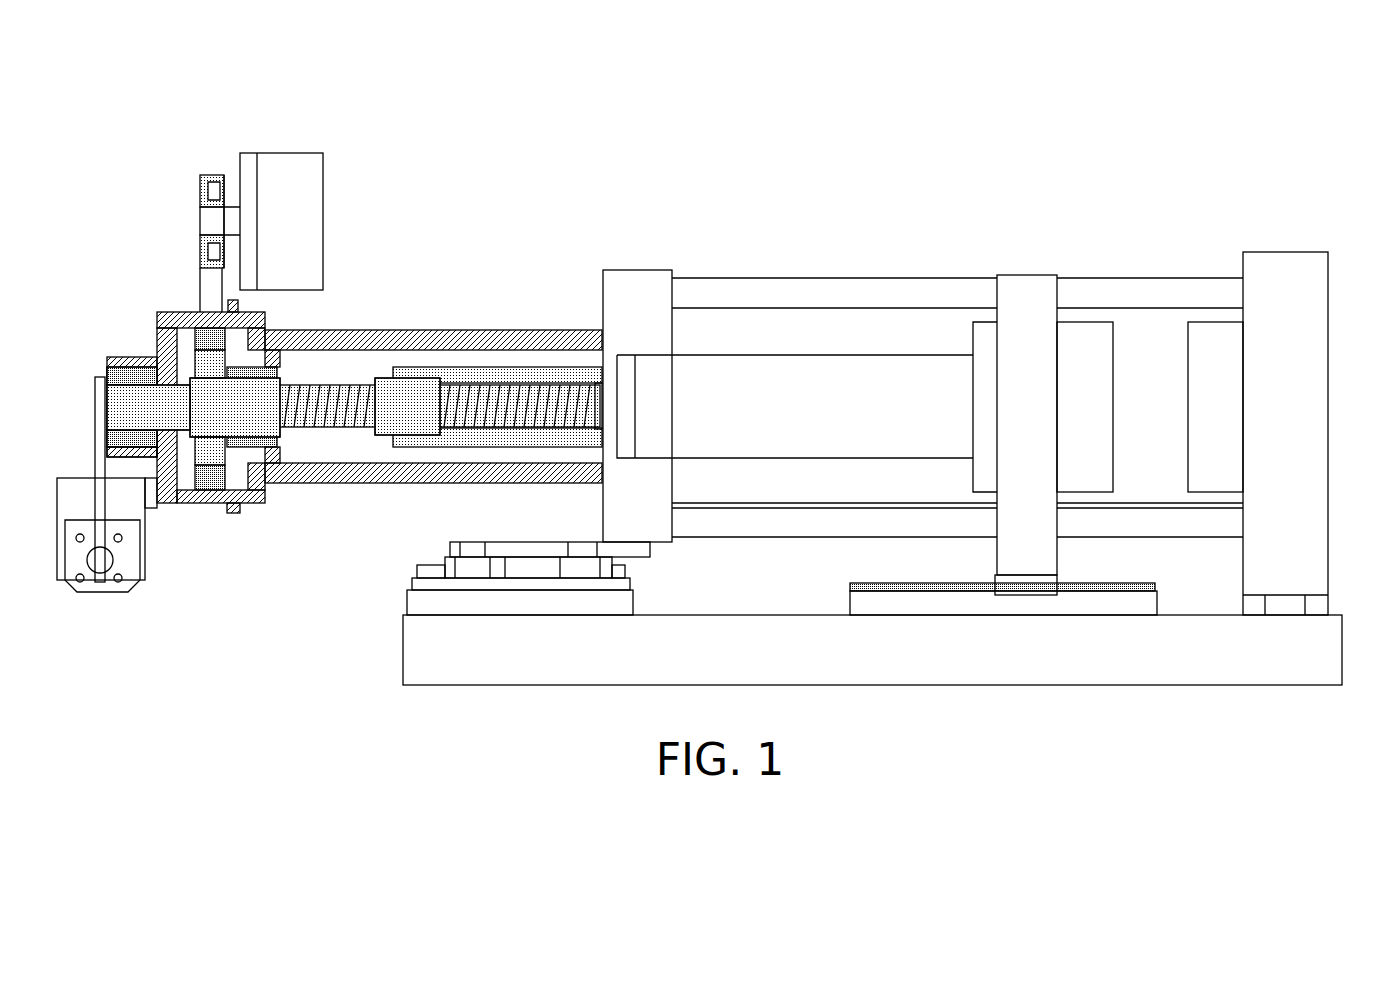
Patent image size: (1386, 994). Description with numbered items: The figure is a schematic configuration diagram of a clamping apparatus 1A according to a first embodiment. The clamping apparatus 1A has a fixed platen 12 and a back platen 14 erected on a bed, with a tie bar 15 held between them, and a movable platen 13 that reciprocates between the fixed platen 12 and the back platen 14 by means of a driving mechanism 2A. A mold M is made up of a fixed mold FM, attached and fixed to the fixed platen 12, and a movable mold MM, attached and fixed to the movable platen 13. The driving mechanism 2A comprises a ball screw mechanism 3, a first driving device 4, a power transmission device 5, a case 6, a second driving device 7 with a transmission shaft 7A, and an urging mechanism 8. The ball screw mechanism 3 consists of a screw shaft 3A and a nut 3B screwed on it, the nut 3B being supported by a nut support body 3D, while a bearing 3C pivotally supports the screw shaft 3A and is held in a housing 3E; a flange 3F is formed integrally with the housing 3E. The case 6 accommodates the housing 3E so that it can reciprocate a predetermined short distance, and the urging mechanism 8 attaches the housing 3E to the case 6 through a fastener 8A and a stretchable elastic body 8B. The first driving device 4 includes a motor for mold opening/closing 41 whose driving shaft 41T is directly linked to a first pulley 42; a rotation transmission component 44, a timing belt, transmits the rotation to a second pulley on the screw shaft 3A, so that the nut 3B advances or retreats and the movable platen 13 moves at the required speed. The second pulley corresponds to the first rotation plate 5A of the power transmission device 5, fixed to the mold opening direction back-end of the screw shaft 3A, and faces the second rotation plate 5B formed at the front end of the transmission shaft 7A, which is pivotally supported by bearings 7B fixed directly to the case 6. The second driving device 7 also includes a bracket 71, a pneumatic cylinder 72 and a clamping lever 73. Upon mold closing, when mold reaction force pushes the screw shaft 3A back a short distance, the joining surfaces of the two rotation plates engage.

The clamping apparatus 1A is at (1147, 195).
The driving mechanism 2A is at (122, 165).
The ball screw mechanism 3 is at (380, 345).
The screw shaft 3A is at (482, 428).
The nut 3B is at (442, 443).
The bearing 3C is at (310, 330).
The nut support body 3D is at (467, 365).
The housing 3E is at (283, 440).
The flange 3F is at (263, 503).
The first driving device 4 is at (135, 225).
The motor for mold opening/closing 41 is at (320, 190).
The driving shaft 41T is at (203, 223).
The first pulley 42 is at (205, 190).
The rotation transmission component 44 is at (197, 283).
The power transmission device 5 is at (160, 312).
The first rotation plate 5A is at (150, 322).
The second rotation plate 5B is at (112, 357).
The case 6 is at (210, 507).
The second driving device 7 is at (162, 563).
The transmission shaft 7A is at (117, 390).
The bearing 7B is at (103, 450).
The bracket 71 is at (157, 508).
The cylinder 72 is at (125, 585).
The clamping lever 73 is at (100, 432).
The urging mechanism 8 is at (250, 503).
The fastener 8A is at (185, 310).
The elastic body 8B is at (236, 300).
The fixed platen 12 is at (1318, 342).
The movable platen 13 is at (1030, 275).
The back platen 14 is at (620, 278).
The tie bar 15 is at (835, 282).
The mold M is at (1150, 490).
The movable mold MM is at (1110, 393).
The fixed mold FM is at (1230, 410).